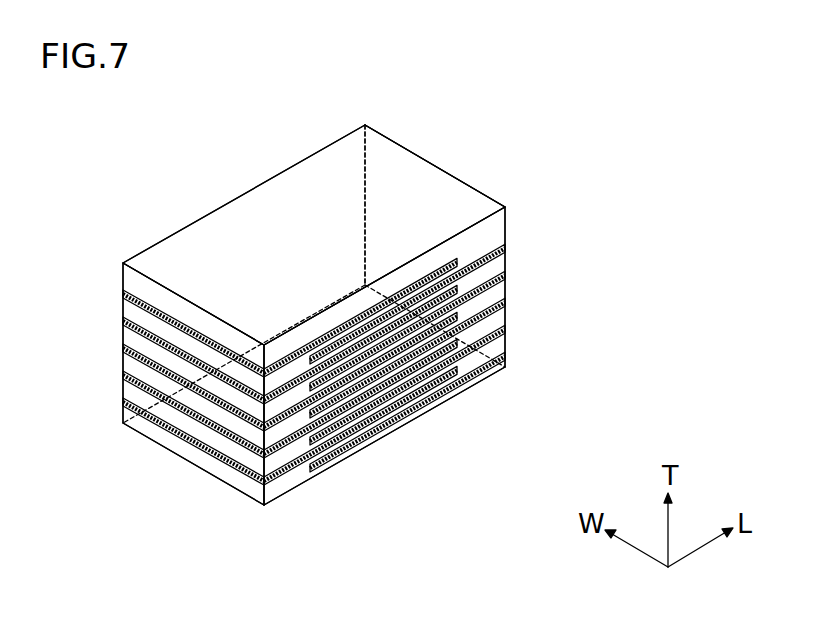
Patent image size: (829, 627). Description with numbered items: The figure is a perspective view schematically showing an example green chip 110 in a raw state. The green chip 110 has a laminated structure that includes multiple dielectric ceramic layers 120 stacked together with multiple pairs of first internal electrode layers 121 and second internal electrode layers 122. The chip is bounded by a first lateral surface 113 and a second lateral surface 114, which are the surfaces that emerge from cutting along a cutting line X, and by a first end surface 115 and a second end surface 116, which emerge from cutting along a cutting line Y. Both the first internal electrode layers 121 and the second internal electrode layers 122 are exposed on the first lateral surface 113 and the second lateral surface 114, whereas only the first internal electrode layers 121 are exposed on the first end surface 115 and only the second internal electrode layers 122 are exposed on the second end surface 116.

The green chip 110 is at (106, 145).
The first lateral surface 113 is at (235, 232).
The second lateral surface 114 is at (427, 393).
The first end surface 115 is at (186, 421).
The second end surface 116 is at (418, 188).
The dielectric ceramic layers 120 is at (360, 403).
The first internal electrode layers 121 is at (127, 332).
The second internal electrode layers 122 is at (505, 279).